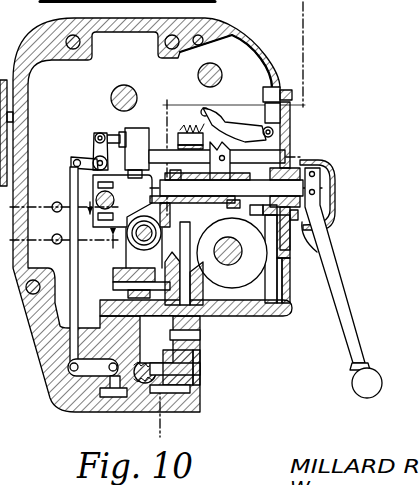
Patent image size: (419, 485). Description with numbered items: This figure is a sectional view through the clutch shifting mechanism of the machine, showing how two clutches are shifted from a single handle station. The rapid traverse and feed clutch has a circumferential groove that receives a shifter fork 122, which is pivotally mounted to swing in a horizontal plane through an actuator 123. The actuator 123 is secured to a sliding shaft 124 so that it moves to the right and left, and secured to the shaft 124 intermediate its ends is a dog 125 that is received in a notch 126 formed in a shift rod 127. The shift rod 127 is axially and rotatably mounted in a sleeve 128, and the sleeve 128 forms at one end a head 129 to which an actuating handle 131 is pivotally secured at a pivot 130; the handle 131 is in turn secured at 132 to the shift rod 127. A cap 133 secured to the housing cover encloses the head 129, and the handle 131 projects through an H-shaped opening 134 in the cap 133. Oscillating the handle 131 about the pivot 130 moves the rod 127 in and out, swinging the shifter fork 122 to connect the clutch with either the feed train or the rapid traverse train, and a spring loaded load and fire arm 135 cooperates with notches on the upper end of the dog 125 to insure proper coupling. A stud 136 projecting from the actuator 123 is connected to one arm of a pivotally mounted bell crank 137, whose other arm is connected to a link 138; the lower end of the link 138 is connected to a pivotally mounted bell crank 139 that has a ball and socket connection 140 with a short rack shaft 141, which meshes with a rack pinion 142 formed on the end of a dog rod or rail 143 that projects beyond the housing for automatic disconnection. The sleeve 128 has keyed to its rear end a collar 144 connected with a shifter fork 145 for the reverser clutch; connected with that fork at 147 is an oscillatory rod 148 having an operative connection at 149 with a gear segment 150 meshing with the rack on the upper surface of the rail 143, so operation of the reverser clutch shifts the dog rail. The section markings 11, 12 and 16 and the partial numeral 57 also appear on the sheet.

The section line 11- 11 is at (94, 215).
The section line 12- 12 is at (116, 249).
The section line 16- 16 is at (310, 12).
The frame member 57 is at (7, 375).
The shifter fork 122 is at (104, 224).
The actuator 123 is at (136, 136).
The sliding shaft 124 is at (160, 155).
The dog 125 is at (275, 135).
The notch 126 is at (218, 213).
The shift rod 127 is at (318, 245).
The sleeve 128 is at (298, 160).
The head 129 is at (295, 175).
The pivot 130 is at (305, 178).
The actuating handle 131 is at (342, 292).
The connection 132 is at (316, 193).
The cap 133 is at (322, 183).
The H-shaped opening 134 is at (332, 222).
The spring loaded load and fire arm 135 is at (238, 127).
The stud 136 is at (108, 132).
The bell crank 137 is at (88, 153).
The link 138 is at (71, 253).
The bell crank 139 is at (107, 342).
The ball and socket connection 140 is at (108, 398).
The short rack shaft 141 is at (134, 380).
The rack pinion 142 is at (198, 368).
The dog rod or rail 143 is at (198, 382).
The collar 144 is at (172, 177).
The shifter fork 145 is at (130, 255).
The connection 147 is at (198, 238).
The oscillatory rod 148 is at (203, 272).
The operative connection 149 is at (205, 295).
The gear segment 150 is at (205, 360).